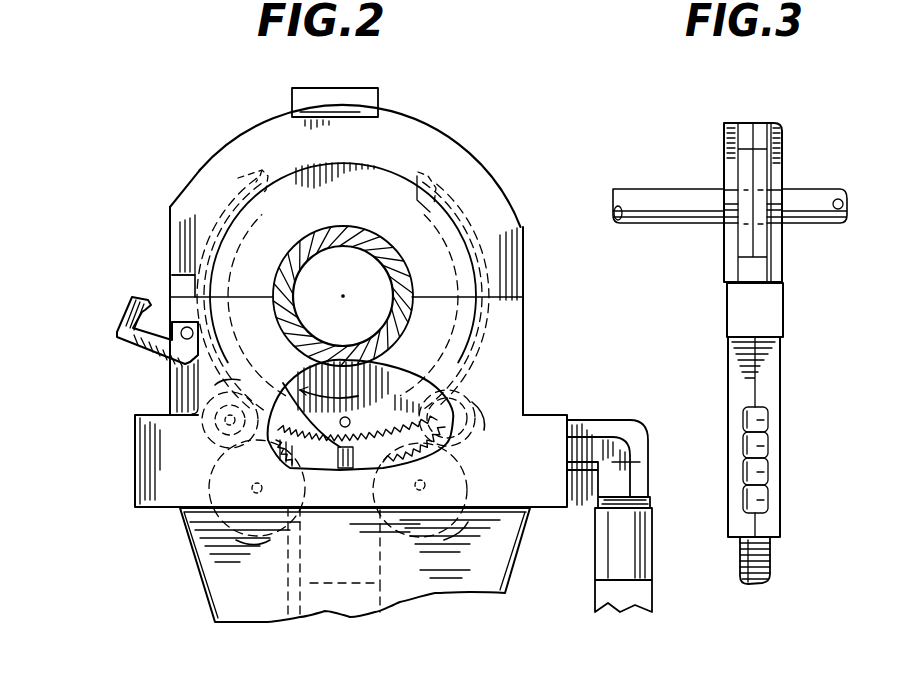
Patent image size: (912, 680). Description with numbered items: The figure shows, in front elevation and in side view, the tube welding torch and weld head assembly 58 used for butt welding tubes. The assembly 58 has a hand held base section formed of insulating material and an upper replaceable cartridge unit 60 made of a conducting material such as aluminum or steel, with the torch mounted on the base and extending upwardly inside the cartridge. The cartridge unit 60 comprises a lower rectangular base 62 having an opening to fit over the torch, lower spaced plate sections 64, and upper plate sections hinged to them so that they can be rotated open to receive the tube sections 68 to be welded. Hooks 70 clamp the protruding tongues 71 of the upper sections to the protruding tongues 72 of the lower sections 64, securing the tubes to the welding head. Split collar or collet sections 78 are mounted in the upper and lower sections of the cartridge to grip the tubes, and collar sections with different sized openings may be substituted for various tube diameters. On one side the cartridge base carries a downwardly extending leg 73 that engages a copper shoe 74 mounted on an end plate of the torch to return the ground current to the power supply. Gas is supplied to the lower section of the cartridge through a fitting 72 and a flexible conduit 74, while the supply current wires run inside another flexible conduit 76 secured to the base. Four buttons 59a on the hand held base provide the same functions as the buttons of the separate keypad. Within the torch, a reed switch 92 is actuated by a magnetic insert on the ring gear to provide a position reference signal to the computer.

In FIG. 2, the tube welding torch and weld head assembly 58 is at (357, 293).
In FIG. 3, the tube welding torch and weld head assembly 58 is at (729, 177).
In FIG. 2, the upper replaceable cartridge unit 60 is at (227, 140).
In FIG. 2, the lower rectangular base 62 is at (553, 413).
In FIG. 3, the lower rectangular base 62 is at (785, 410).
In FIG. 2, the lower spaced plate sections 64 is at (527, 358).
In FIG. 3, the lower spaced plate sections 64 is at (723, 153).
In FIG. 3, the tube sections 68 is at (655, 227).
In FIG. 2, the hooks 70 is at (120, 327).
In FIG. 2, the protruding tongues 71 is at (170, 282).
In FIG. 2, the protruding tongues / fitting 72 is at (167, 303).
In FIG. 2, the downwardly extending leg 73 is at (380, 613).
In FIG. 2, the copper shoe / flexible conduit 74 is at (293, 617).
In FIG. 3, the flexible conduit 76 is at (763, 556).
In FIG. 2, the split collar or collet sections 78 is at (372, 216).
In FIG. 3, the split collar or collet sections 78 is at (727, 178).
In FIG. 2, the reed switch 92 is at (287, 393).
In FIG. 3, the buttons 59a is at (762, 500).